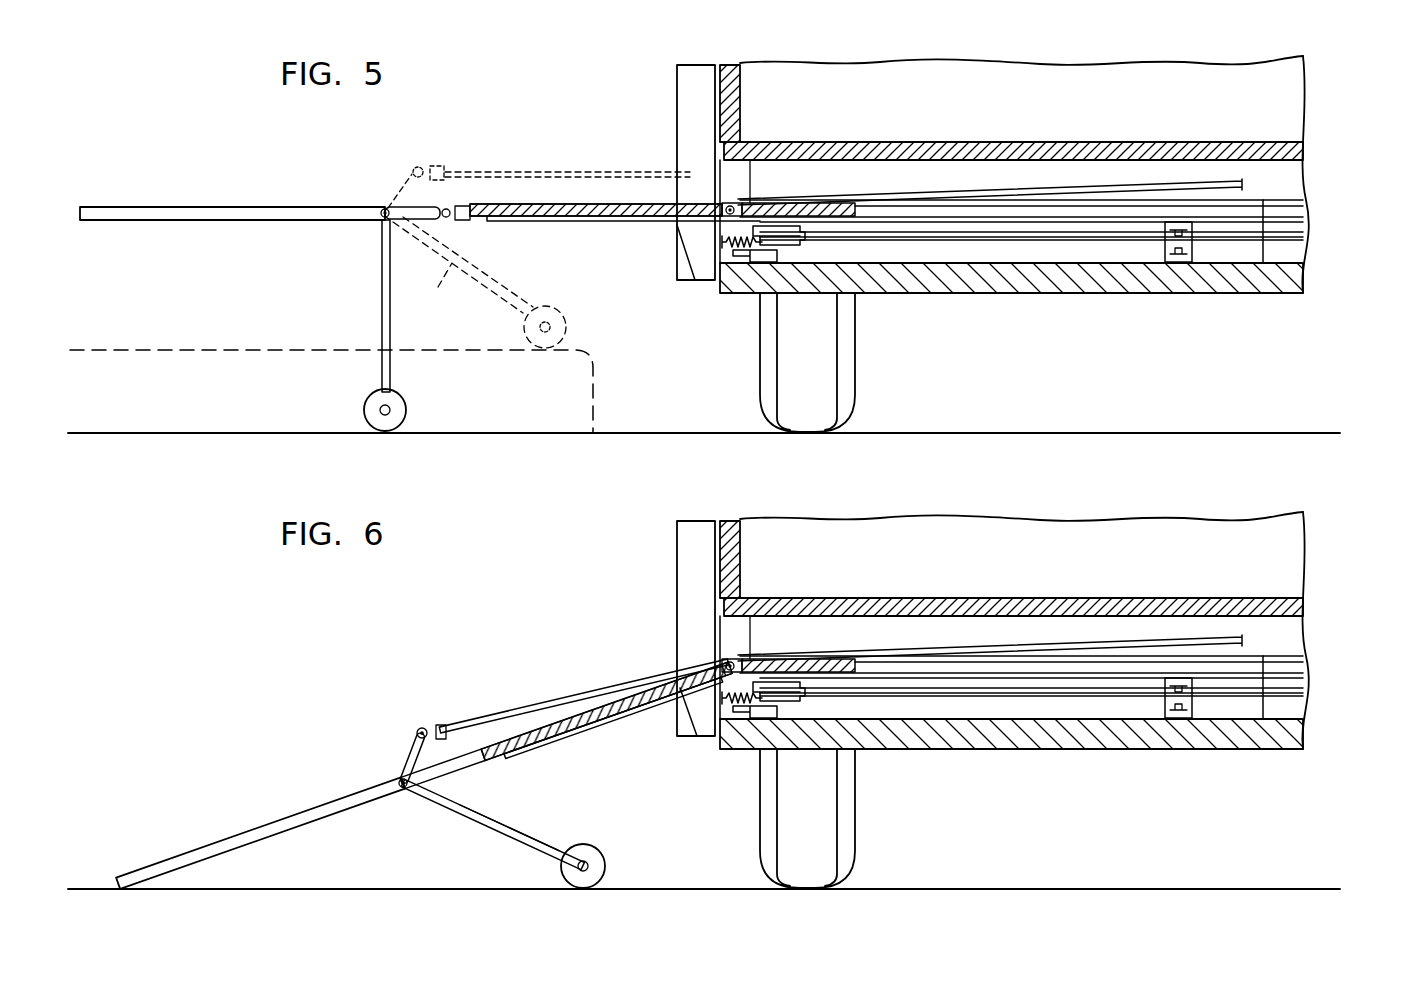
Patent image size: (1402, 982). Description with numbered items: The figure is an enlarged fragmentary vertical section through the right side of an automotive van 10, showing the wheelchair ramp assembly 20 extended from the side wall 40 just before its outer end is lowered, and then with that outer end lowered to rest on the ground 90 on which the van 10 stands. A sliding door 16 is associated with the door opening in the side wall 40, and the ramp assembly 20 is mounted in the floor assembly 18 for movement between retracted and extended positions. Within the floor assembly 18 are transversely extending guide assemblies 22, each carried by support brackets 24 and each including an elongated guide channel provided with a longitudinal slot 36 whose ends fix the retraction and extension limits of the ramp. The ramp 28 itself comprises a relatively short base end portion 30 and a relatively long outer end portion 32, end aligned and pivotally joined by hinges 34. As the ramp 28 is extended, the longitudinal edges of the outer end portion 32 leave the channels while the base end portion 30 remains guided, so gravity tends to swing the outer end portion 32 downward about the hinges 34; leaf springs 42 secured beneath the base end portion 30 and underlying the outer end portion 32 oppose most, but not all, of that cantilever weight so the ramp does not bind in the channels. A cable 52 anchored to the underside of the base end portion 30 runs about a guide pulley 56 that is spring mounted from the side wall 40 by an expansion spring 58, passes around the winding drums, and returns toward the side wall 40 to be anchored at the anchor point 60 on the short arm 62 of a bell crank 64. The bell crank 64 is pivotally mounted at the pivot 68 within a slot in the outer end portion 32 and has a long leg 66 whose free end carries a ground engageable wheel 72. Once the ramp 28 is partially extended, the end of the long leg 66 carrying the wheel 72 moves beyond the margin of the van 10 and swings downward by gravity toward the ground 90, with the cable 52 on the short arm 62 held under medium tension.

In FIG. 5, the automotive van 10 is at (1305, 104).
In FIG. 6, the automotive van 10 is at (1040, 624).
In FIG. 5, the sliding door 16 is at (680, 104).
In FIG. 6, the sliding door 16 is at (668, 628).
In FIG. 5, the floor assembly 18 is at (980, 142).
In FIG. 6, the floor assembly 18 is at (1013, 579).
In FIG. 5, the ramp assembly 20 is at (598, 221).
In FIG. 6, the ramp assembly 20 is at (521, 729).
In FIG. 5, the guide assembly 22 is at (1255, 197).
In FIG. 6, the guide assembly 22 is at (990, 608).
In FIG. 5, the support bracket 24 is at (778, 255).
In FIG. 6, the support bracket 24 is at (967, 783).
In FIG. 5, the ramp 28 is at (515, 203).
In FIG. 6, the ramp 28 is at (547, 743).
In FIG. 5, the base end portion 30 is at (822, 205).
In FIG. 6, the base end portion 30 is at (798, 644).
In FIG. 5, the outer end portion 32 is at (558, 204).
In FIG. 6, the outer end portion 32 is at (612, 702).
In FIG. 5, the hinge 34 is at (737, 207).
In FIG. 6, the hinge 34 is at (770, 618).
In FIG. 5, the longitudinal slot 36 is at (1265, 263).
In FIG. 6, the longitudinal slot 36 is at (1257, 641).
In FIG. 5, the right side wall 40 is at (740, 107).
In FIG. 6, the right side wall 40 is at (761, 559).
In FIG. 5, the leaf spring 42 is at (566, 218).
In FIG. 6, the leaf spring 42 is at (676, 698).
In FIG. 6, the cable 52 is at (490, 722).
In FIG. 5, the guide pulley 56 is at (802, 237).
In FIG. 6, the guide pulley 56 is at (806, 700).
In FIG. 5, the expansion spring 58 is at (722, 258).
In FIG. 6, the expansion spring 58 is at (730, 746).
In FIG. 6, the cable anchor 60 is at (421, 727).
In FIG. 5, the short arm 62 is at (415, 205).
In FIG. 6, the short arm 62 is at (410, 752).
In FIG. 5, the bell crank 64 is at (390, 305).
In FIG. 6, the bell crank 64 is at (470, 815).
In FIG. 6, the long leg 66 is at (527, 836).
In FIG. 6, the pivot 68 is at (404, 790).
In FIG. 5, the wheel 72 is at (405, 411).
In FIG. 6, the wheel 72 is at (598, 853).
In FIG. 5, the ground 90 is at (970, 431).
In FIG. 6, the ground 90 is at (704, 863).